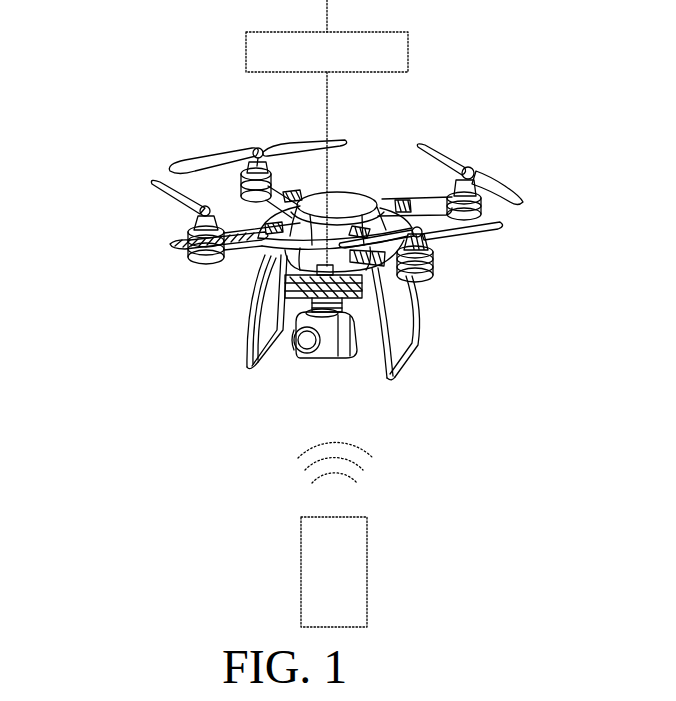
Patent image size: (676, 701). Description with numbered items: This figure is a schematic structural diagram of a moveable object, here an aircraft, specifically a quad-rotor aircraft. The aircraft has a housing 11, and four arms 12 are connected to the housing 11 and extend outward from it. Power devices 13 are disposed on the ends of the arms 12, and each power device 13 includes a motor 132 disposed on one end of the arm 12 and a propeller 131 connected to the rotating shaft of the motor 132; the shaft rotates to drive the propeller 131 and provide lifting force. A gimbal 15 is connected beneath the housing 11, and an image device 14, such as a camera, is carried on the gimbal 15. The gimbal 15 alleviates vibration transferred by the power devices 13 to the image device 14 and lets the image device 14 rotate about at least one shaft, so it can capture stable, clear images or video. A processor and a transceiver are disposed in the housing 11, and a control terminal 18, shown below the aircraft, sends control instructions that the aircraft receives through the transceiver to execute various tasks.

The housing 11 is at (340, 200).
The arms 12 is at (250, 252).
The power devices 13 is at (432, 263).
The propeller 131 is at (257, 157).
The motor 132 is at (185, 233).
The image device 14 is at (297, 354).
The gimbal 15 is at (363, 306).
The control terminal 18 is at (367, 570).